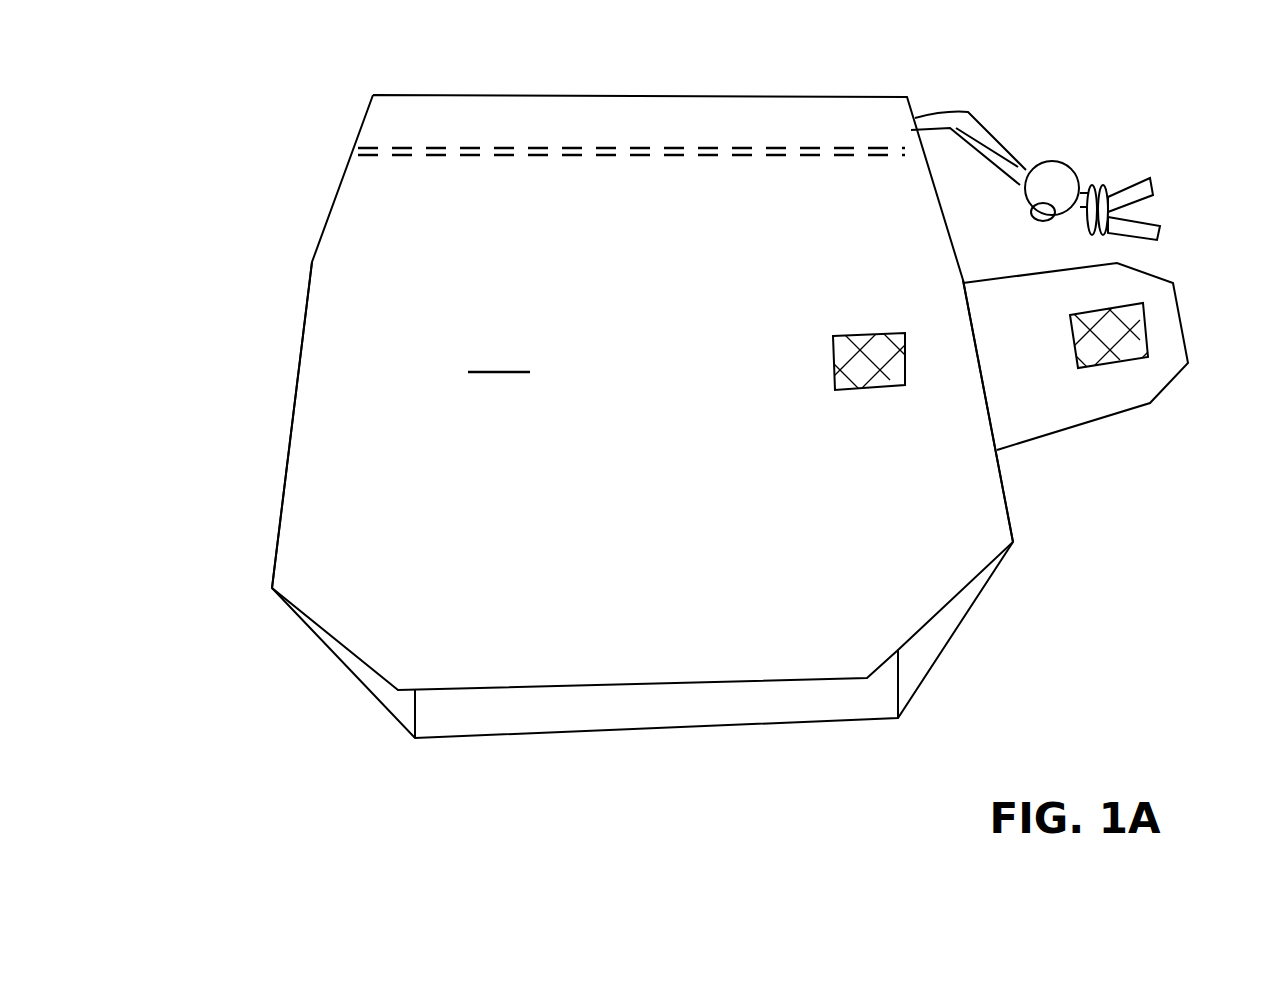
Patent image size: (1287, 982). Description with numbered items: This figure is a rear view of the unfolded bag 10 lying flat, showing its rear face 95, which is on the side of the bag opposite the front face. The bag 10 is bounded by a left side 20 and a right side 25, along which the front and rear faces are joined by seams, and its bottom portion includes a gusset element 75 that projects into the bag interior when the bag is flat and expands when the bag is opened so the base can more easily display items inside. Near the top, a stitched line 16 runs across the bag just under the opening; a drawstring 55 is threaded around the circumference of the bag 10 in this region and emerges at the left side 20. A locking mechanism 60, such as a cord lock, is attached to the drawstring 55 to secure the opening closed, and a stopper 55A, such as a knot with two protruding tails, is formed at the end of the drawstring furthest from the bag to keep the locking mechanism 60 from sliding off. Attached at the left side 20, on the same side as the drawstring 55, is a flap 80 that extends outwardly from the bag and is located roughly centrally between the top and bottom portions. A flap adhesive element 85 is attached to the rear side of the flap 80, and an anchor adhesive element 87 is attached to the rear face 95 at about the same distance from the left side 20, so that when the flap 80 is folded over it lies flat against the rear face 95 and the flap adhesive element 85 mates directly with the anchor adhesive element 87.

The bag 10 is at (604, 390).
The drawstring channel stitching 16 is at (753, 153).
The left side 20 is at (1043, 439).
The right side 25 is at (240, 425).
The drawstring 55 is at (973, 112).
The stopper 55A is at (1110, 180).
The locking mechanism 60 is at (1048, 165).
The gusset element 75 is at (592, 712).
The flap 80 is at (1103, 397).
The flap adhesive element 85 is at (1133, 328).
The anchor adhesive element 87 is at (847, 333).
The rear face 95 is at (499, 347).